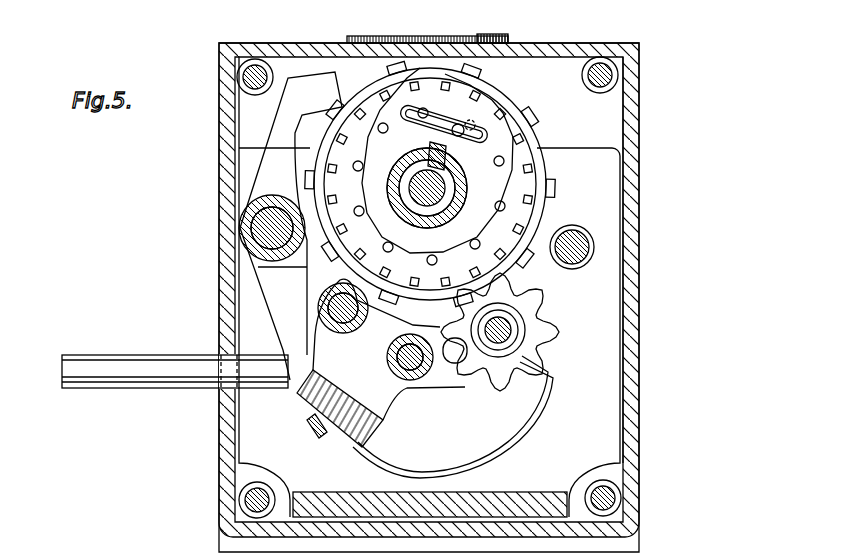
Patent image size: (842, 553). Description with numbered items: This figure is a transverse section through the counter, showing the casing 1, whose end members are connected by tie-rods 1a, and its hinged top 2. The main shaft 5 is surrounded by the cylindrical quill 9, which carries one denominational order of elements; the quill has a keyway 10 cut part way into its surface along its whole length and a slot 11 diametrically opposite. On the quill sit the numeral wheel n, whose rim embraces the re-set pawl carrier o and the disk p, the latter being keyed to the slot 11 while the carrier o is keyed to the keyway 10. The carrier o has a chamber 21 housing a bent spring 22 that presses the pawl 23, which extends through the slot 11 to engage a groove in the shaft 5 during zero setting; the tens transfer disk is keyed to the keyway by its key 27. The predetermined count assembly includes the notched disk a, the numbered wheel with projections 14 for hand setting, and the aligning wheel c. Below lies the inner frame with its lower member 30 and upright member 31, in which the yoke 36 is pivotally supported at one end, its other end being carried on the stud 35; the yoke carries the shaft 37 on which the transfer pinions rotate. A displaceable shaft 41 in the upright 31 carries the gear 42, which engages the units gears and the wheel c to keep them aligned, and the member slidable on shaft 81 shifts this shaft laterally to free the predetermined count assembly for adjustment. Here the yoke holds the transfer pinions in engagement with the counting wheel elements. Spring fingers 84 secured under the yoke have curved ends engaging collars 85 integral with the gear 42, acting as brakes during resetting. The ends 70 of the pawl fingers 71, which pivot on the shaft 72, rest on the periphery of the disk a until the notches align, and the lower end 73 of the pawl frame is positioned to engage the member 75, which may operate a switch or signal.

The casing 1 is at (604, 127).
The tie-rods 1a is at (241, 64).
The hinged top 2 is at (580, 43).
The shaft 5 is at (407, 181).
The quill 9 is at (397, 154).
The keyway 10 is at (463, 213).
The slot 11 is at (427, 143).
The projections 14 is at (550, 182).
The chamber 21 is at (487, 128).
The bent spring 22 is at (470, 120).
The pawl 23 is at (448, 150).
The key 27 is at (410, 243).
The lower member 30 is at (337, 493).
The upright member 31 is at (610, 408).
The stud 35 is at (395, 372).
The yoke 36 is at (379, 409).
The shaft 37 is at (345, 328).
The shaft 41 is at (517, 327).
The gear 42 is at (527, 305).
The ends of pawl fingers 70 is at (330, 72).
The pawl fingers 71 is at (280, 128).
The shaft 72 is at (253, 224).
The lower end of pawl frame 73 is at (265, 310).
The member 75 is at (183, 387).
The shaft 81 is at (585, 246).
The spring fingers 84 is at (512, 449).
The collars 85 is at (538, 348).
The disk a is at (402, 357).
The aligning wheel c is at (551, 224).
The numeral wheel n is at (435, 72).
The re-set pawl carrier o is at (414, 78).
The disk p is at (492, 36).